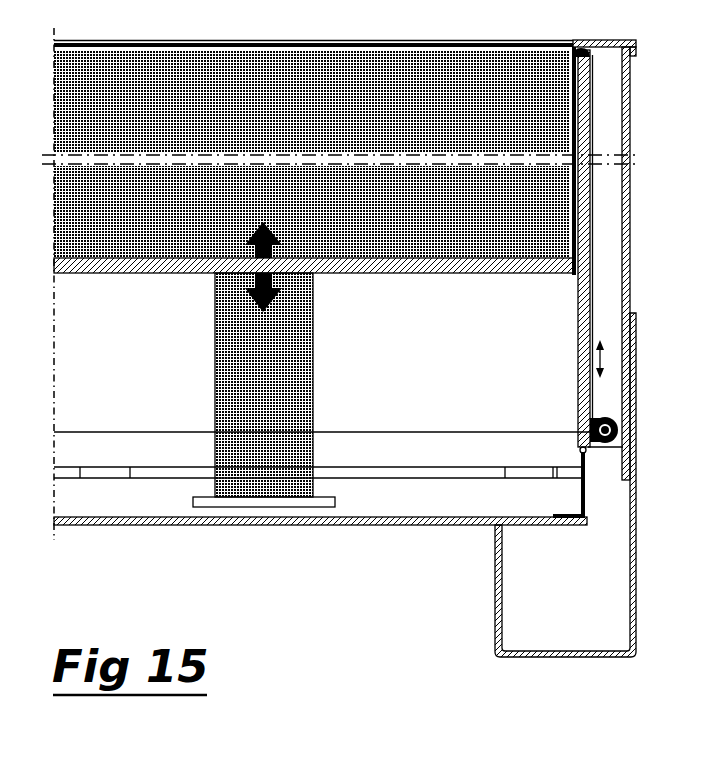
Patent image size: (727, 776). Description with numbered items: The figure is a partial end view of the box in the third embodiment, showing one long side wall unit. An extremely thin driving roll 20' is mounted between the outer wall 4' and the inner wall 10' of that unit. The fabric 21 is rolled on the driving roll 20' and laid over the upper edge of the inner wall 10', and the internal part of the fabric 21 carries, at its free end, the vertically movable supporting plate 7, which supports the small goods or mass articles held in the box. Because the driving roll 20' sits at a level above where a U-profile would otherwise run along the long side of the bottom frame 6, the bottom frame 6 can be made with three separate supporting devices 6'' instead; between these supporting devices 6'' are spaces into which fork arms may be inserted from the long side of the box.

The fabric 21 is at (592, 130).
The outer wall 4' is at (642, 263).
The supporting plate 7 is at (364, 275).
The inner wall 10' is at (556, 250).
The driving roll 20' is at (567, 415).
The bottom frame 6 is at (320, 564).
The supporting device 6'' is at (546, 490).